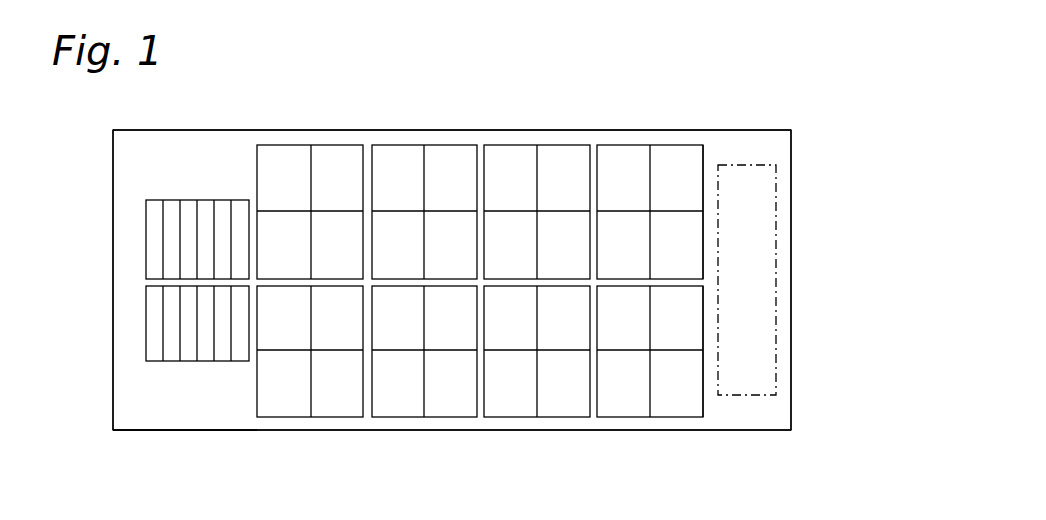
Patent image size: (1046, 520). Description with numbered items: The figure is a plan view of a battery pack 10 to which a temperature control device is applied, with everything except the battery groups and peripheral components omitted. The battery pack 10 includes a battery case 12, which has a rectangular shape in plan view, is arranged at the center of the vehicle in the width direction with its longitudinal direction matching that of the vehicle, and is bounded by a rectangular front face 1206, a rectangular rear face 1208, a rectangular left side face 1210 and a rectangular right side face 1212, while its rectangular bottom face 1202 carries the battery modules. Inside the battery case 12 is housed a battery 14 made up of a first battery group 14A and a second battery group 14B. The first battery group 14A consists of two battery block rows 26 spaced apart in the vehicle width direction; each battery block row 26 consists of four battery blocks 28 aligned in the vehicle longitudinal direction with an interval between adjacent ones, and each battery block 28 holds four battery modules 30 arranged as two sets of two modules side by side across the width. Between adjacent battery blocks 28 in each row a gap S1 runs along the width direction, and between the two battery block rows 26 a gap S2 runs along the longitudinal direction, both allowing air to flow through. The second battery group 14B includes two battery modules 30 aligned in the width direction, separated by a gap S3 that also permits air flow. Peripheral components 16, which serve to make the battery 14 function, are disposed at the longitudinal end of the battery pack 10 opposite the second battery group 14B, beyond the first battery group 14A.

The battery pack 10 is at (438, 112).
The battery case 12 is at (596, 130).
The right side face 1212 is at (477, 130).
The front face 1206 is at (112, 375).
The rear face 1208 is at (795, 372).
The left side face 1210 is at (437, 432).
The bottom face 1202 is at (230, 407).
The battery 14 is at (453, 298).
The first battery group 14A is at (453, 297).
The second battery group 14B is at (183, 370).
The battery block 28 is at (323, 145).
The battery module 30 is at (145, 223).
The battery block row 26 is at (707, 209).
The peripheral components 16 is at (760, 165).
The gap S1 is at (365, 385).
The gap S2 is at (627, 275).
The gap S3 is at (192, 281).